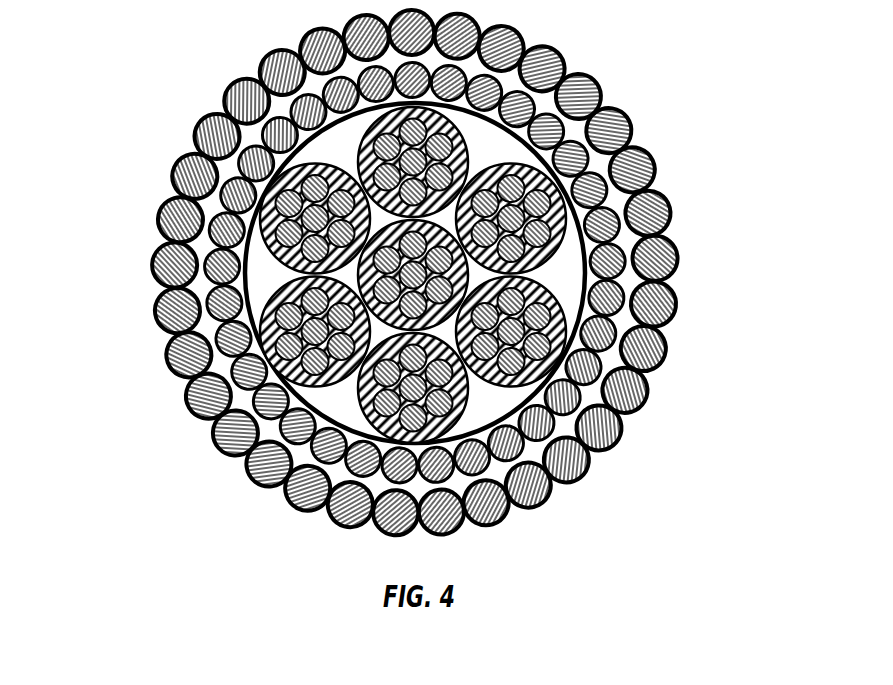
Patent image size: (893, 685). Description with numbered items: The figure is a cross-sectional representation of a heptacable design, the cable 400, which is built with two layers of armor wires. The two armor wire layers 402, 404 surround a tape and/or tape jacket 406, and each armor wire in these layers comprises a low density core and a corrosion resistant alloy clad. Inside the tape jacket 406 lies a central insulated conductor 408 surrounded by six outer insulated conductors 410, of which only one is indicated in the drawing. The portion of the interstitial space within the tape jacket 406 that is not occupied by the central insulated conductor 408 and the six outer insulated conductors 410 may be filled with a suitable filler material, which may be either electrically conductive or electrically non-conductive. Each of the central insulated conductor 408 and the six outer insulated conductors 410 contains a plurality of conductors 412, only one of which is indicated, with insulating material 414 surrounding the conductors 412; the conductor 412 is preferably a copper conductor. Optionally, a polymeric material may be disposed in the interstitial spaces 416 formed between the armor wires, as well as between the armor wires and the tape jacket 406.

The cable 400 is at (150, 68).
The armor wire layer 402 is at (522, 65).
The armor wire layer 404 is at (588, 470).
The tape jacket 406 is at (680, 263).
The central insulated conductor 408 is at (627, 338).
The outer insulated conductor 410 is at (173, 350).
The conductor 412 is at (197, 170).
The insulating material 414 is at (353, 487).
The interstitial space 416 is at (190, 417).